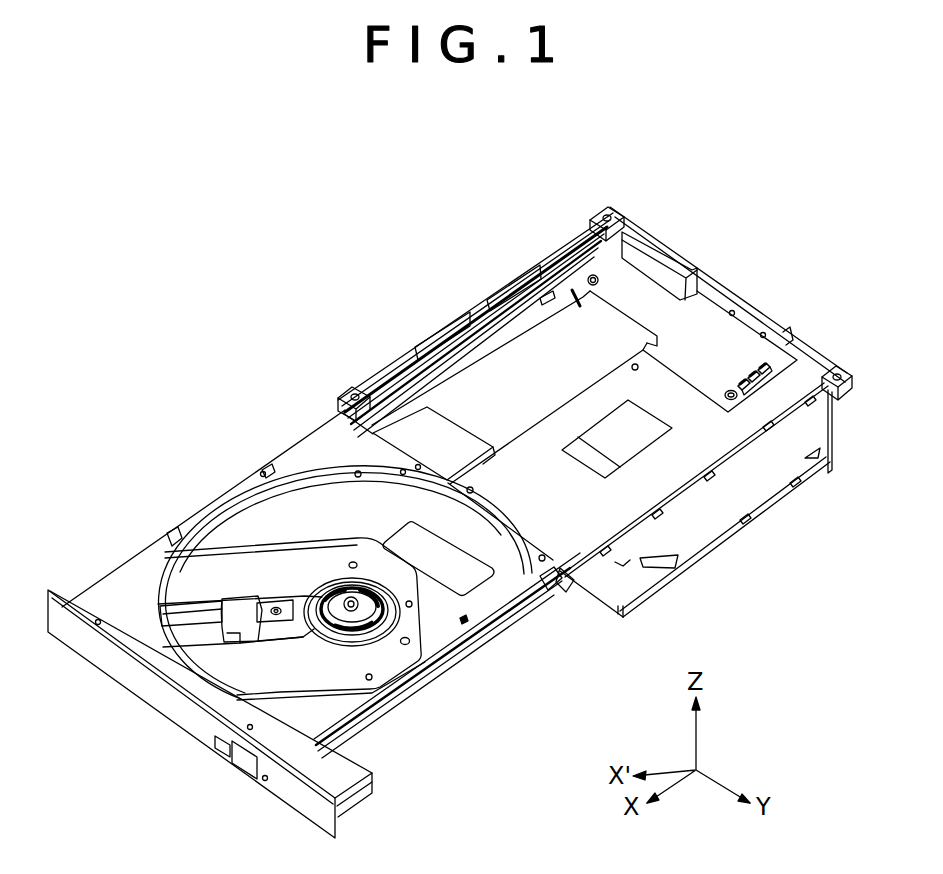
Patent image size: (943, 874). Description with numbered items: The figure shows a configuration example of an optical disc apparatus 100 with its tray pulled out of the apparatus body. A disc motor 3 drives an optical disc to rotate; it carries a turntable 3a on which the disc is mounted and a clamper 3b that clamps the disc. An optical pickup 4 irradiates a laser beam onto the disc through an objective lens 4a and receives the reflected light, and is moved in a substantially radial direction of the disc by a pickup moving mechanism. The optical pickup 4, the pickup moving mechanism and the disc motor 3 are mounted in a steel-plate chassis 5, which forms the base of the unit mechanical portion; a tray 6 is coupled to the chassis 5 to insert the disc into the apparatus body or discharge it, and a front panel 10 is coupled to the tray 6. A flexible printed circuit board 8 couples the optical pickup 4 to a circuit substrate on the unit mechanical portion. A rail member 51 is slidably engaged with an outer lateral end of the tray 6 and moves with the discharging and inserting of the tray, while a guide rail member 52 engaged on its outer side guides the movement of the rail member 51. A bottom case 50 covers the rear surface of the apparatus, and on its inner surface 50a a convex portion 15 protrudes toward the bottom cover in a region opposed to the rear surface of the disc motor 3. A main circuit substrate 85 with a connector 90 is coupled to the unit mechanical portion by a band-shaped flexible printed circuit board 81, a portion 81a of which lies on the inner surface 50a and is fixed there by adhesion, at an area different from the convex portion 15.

The optical disc apparatus 100 is at (214, 268).
The front panel 10 is at (183, 715).
The chassis 5 is at (265, 541).
The tray 6 is at (213, 512).
The flexible printed circuit board 8 is at (187, 612).
The optical pickup 4 is at (277, 633).
The objective lens 4a is at (277, 603).
The disc motor 3 is at (330, 628).
The turntable 3a is at (335, 587).
The clamper 3b is at (358, 587).
The rail member 51 is at (483, 640).
The guide rail member 52 is at (502, 291).
The flexible printed circuit board 81 is at (470, 403).
The fixed portion of flexible printed circuit board 81a is at (557, 353).
The connector 90 is at (620, 313).
The main circuit substrate 85 is at (730, 343).
The convex portion 15 is at (640, 433).
The bottom case 50 is at (712, 273).
The inner surface of bottom case 50a is at (697, 453).